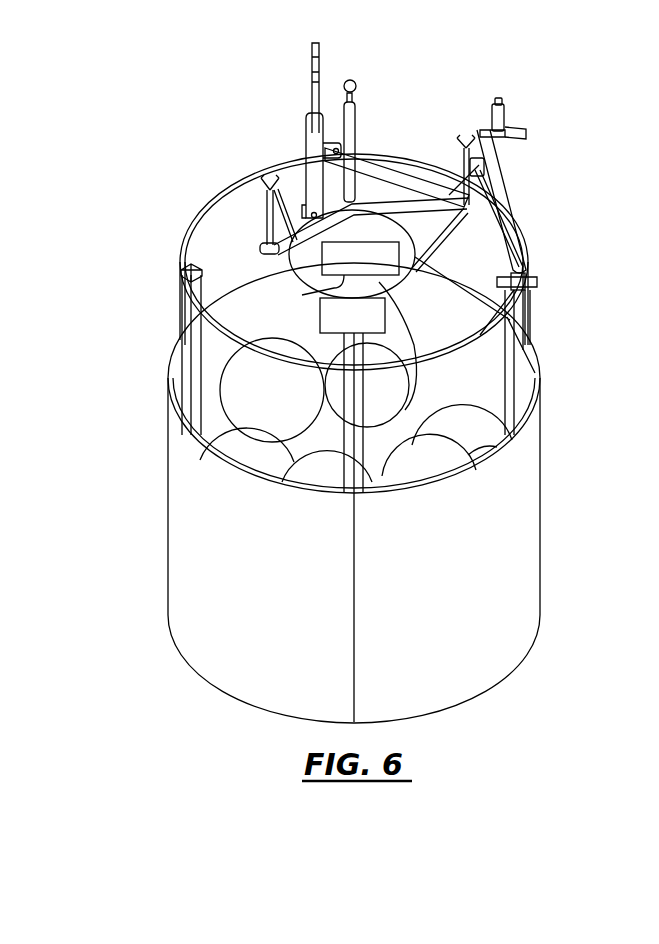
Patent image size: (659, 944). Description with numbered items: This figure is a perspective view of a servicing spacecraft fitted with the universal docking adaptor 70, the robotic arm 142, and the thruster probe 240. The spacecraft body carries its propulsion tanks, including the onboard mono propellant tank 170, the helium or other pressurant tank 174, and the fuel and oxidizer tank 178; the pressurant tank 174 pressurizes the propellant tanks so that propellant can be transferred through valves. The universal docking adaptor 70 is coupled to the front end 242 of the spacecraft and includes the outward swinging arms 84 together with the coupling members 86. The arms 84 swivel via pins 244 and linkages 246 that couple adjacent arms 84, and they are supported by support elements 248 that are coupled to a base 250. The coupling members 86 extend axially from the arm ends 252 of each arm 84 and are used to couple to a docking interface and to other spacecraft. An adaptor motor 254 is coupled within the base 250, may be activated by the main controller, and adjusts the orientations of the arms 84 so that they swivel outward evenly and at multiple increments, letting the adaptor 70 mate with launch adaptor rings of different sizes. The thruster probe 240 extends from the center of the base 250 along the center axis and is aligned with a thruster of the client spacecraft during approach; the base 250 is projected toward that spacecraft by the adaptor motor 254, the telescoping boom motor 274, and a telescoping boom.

The universal docking adaptor 70 is at (398, 285).
The outward swinging arms 84 is at (304, 143).
The coupling members 86 is at (310, 77).
The robotic arm 142 is at (497, 165).
The onboard mono propellant tank 170 is at (222, 388).
The pressurant tank 174 is at (533, 392).
The fuel and oxidizer tank 178 is at (308, 458).
The thruster probe 240 is at (355, 140).
The front end 242 is at (178, 238).
The pins 244 is at (333, 145).
The linkages 246 is at (326, 140).
The support elements 248 is at (212, 297).
The base 250 is at (427, 407).
The arm ends 252 is at (307, 113).
The adaptor motor 254 is at (306, 292).
The telescoping boom motor 274 is at (322, 340).